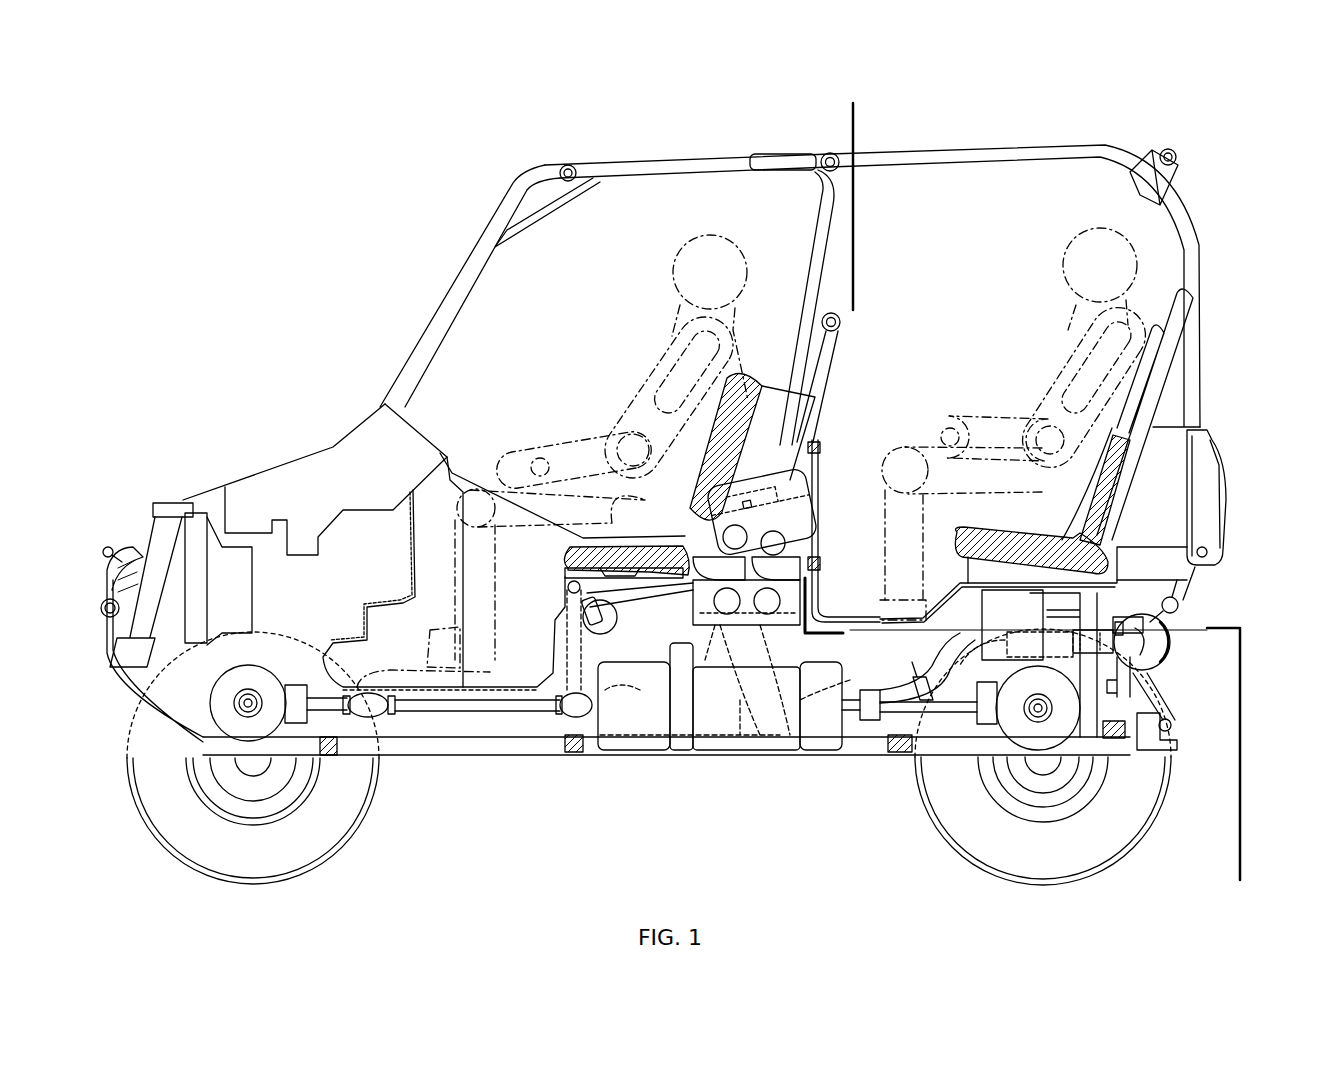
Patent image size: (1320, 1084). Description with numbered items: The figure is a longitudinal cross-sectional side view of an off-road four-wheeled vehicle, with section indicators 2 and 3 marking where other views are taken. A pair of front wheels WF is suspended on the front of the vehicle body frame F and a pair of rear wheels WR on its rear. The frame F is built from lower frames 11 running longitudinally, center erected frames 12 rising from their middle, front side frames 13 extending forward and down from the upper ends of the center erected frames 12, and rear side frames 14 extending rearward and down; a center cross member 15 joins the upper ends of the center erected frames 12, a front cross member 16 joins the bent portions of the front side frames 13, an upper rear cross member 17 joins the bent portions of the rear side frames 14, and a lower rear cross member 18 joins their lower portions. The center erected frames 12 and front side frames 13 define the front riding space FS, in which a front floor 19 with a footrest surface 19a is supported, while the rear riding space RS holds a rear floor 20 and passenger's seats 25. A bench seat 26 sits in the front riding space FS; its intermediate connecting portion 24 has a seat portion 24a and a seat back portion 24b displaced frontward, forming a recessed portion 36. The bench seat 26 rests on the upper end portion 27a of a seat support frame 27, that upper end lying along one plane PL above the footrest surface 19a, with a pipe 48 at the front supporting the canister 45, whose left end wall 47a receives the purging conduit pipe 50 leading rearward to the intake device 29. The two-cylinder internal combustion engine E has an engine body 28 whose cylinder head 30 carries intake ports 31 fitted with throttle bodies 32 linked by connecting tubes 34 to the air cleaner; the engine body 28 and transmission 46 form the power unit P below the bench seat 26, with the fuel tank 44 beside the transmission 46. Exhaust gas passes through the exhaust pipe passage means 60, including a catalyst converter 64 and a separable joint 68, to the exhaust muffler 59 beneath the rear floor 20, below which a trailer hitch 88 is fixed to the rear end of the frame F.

The section view direction arrow 2 is at (797, 138).
The section line 3- 3 is at (856, 112).
The lower frames 11 is at (457, 752).
The center erected frames 12 is at (806, 284).
The front side frames 13 is at (427, 338).
The rear side frames 14 is at (980, 150).
The center cross member 15 is at (828, 174).
The front cross member 16 is at (567, 165).
The upper rear cross member 17 is at (1176, 150).
The lower rear cross member 18 is at (1180, 597).
The front floor 19 is at (513, 699).
The footrest surface 19a is at (491, 688).
The rear floor 20 is at (873, 628).
The intermediate connecting portion 24 is at (701, 436).
The seat portion 24a is at (606, 546).
The seat back portion 24b is at (747, 378).
The passenger's seats 25 is at (1028, 540).
The bench seat 26 is at (562, 560).
The seat support frame 27 is at (628, 705).
The upper end portion 27a is at (667, 533).
The engine body 28 is at (807, 650).
The intake device 29 is at (758, 470).
The cylinder head 30 is at (750, 395).
The intake ports 31 is at (697, 606).
The throttle bodies 32 is at (733, 537).
The connecting tubes 34 is at (716, 547).
The recessed portion 36 is at (808, 392).
The fuel tank 44 is at (740, 713).
The canister 45 is at (622, 635).
The transmission 46 is at (660, 745).
The left end wall 47a is at (585, 611).
The pipe 48 is at (568, 588).
The purging conduit pipe 50 is at (622, 634).
The exhaust muffler 59 is at (1160, 637).
The exhaust pipe passage means 60 is at (938, 719).
The catalyst converter 64 is at (1132, 672).
The joint 68 is at (966, 660).
The trailer hitch 88 is at (1178, 728).
The internal combustion engine E is at (804, 548).
The vehicle body frame F is at (605, 759).
The power unit P is at (615, 657).
The plane PL is at (520, 554).
The front riding space FS is at (599, 305).
The rear riding space RS is at (988, 305).
The front wheels WF is at (360, 783).
The rear wheels WR is at (1137, 797).